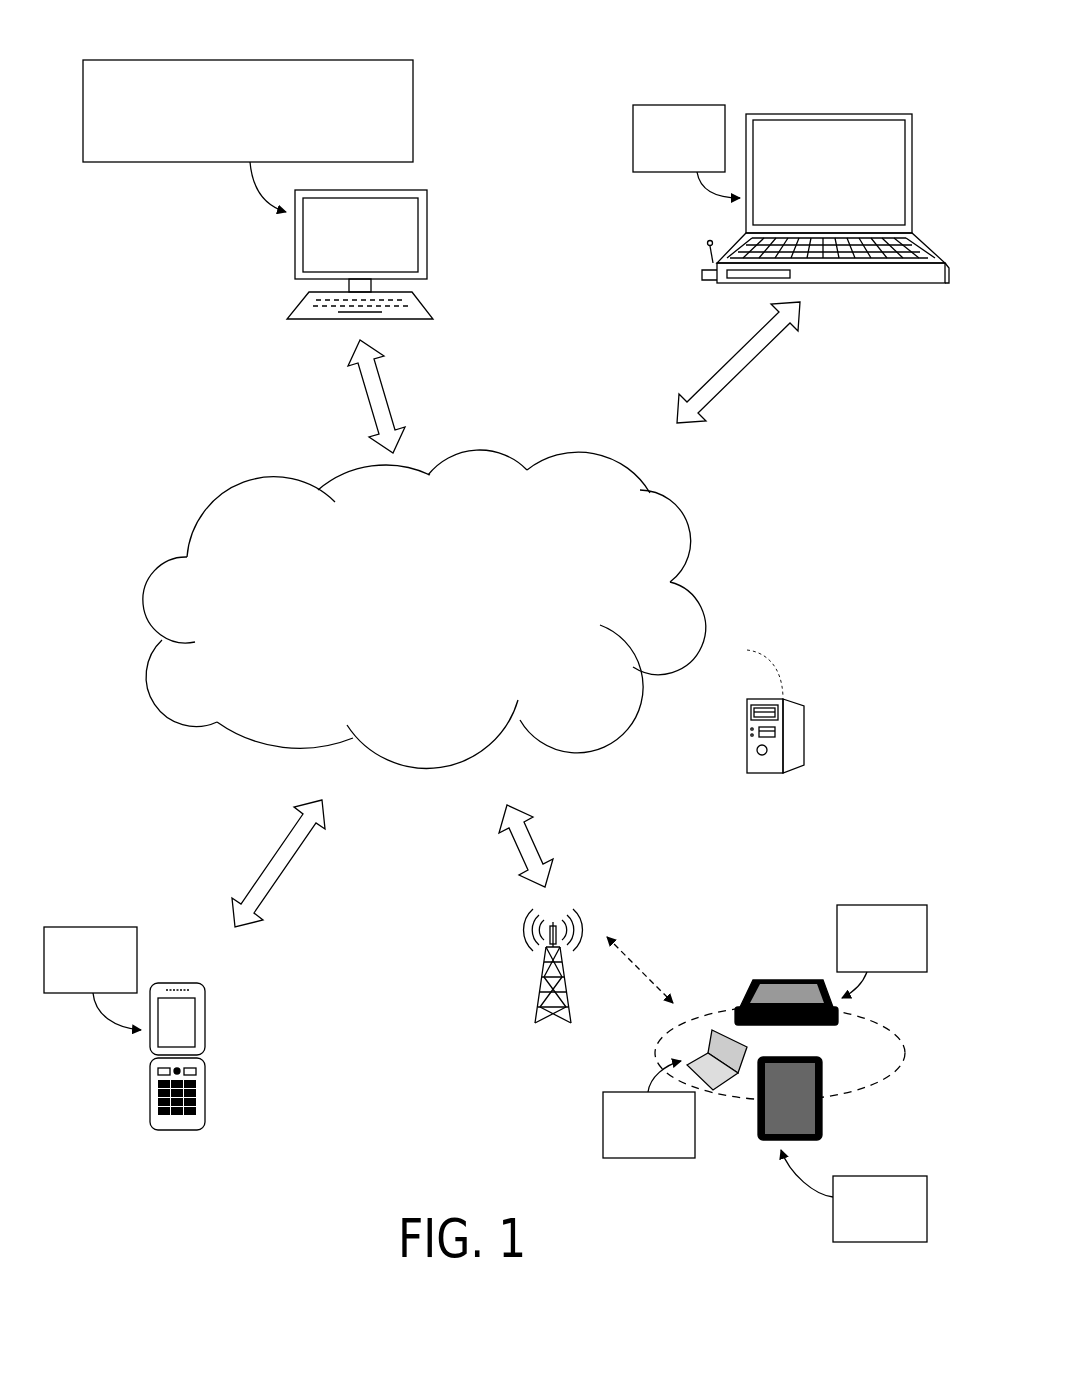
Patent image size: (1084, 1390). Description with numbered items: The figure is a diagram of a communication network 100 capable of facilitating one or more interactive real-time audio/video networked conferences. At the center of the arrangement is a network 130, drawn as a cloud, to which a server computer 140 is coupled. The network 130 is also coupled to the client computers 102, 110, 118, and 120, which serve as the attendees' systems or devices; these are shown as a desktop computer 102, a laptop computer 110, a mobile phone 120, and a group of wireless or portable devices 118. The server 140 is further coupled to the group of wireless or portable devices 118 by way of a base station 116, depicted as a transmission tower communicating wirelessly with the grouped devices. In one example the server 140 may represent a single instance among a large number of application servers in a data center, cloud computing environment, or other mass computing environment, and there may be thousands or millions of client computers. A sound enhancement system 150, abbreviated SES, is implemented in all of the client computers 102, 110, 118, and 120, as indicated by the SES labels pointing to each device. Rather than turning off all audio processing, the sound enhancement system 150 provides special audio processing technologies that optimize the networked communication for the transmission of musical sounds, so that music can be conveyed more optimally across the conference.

The communication network 100 is at (663, 58).
The client computer 102 is at (427, 217).
The client computer 110 is at (833, 113).
The base station 116 is at (545, 987).
The group of wireless or portable devices 118 is at (880, 1080).
The client computer 120 is at (205, 1028).
The network 130 is at (402, 623).
The server computer 140 is at (804, 730).
The sound enhancement system 150 is at (270, 146).